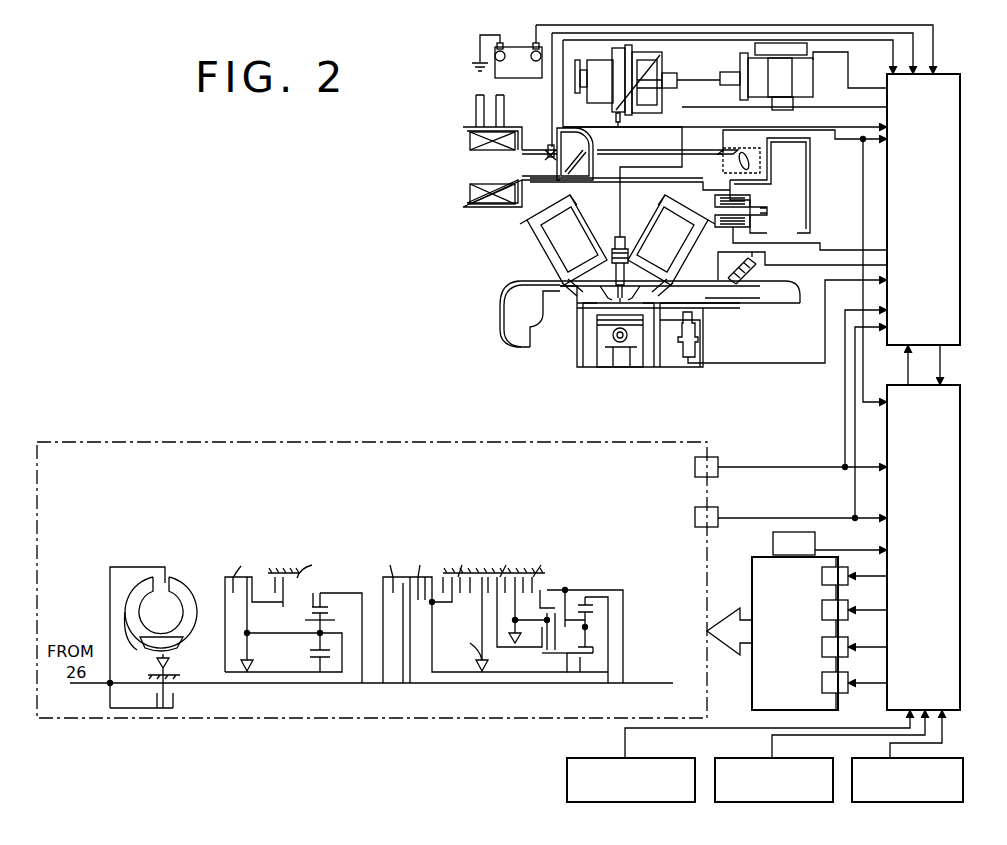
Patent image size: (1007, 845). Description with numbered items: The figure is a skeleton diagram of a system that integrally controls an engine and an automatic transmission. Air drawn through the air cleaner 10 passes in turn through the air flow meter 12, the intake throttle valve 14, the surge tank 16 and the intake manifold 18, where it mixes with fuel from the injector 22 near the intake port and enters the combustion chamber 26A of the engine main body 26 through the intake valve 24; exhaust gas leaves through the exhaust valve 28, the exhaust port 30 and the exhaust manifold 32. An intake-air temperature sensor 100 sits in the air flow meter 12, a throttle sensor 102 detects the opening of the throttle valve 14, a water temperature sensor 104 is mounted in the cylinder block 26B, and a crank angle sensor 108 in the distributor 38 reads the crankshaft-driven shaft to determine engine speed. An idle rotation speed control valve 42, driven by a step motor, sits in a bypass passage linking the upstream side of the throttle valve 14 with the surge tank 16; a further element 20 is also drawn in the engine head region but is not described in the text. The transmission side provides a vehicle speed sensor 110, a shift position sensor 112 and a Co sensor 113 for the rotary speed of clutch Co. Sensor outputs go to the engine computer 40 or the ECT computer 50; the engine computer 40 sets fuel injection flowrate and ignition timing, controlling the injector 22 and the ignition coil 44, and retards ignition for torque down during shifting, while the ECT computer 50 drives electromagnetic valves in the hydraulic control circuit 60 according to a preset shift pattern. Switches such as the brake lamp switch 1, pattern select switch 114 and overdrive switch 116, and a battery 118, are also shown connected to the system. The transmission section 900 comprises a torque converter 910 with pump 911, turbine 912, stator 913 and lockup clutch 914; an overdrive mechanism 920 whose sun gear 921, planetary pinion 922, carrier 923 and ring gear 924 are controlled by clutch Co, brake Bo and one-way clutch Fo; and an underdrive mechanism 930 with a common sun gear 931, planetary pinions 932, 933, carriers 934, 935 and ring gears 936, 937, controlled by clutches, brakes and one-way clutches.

The brake lamp switch 1 is at (963, 768).
The air cleaner 10 is at (470, 165).
The air flow meter 12 is at (570, 145).
The intake throttle valve 14 is at (760, 155).
The surge tank 16 is at (799, 198).
The intake manifold 18 is at (727, 290).
The exhaust valve 20 is at (667, 283).
The injector 22 is at (730, 265).
The intake valve 24 is at (632, 298).
The main body of the engine 26 is at (572, 353).
The combustion chamber 26A is at (607, 307).
The cylinder block 26B is at (660, 350).
The exhaust valve 28 is at (600, 298).
The exhaust port 30 is at (553, 283).
The exhaust manifold 32 is at (520, 300).
The distributor 38 is at (598, 98).
The engine computer 40 is at (943, 222).
The idle rotation speed control valve 42 is at (713, 210).
The ignition coil 44 is at (803, 77).
The ECT computer 50 is at (947, 590).
The hydraulic control circuit 60 is at (752, 665).
The intake-air temperature sensor 100 is at (550, 158).
The throttle sensor 102 is at (722, 145).
The water temperature sensor 104 is at (697, 325).
The crank angle sensor 108 is at (648, 58).
The vehicle speed sensor 110 is at (712, 478).
The shift position sensor 112 is at (712, 528).
The Co sensor 113 is at (802, 526).
The pattern select switch 114 is at (567, 773).
The overdrive switch 116 is at (735, 758).
The battery 118 is at (498, 72).
The transmission section 900 is at (578, 442).
The torque converter 910 is at (140, 563).
The pump 911 is at (193, 593).
The turbine 912 is at (132, 635).
The stator 913 is at (170, 650).
The lockup clutch 914 is at (170, 708).
The overdrive mechanism 920 is at (298, 560).
The sun gear 921 is at (311, 655).
The planetary pinion 922 is at (312, 616).
The carrier 923 is at (328, 610).
The ring gear 924 is at (308, 592).
The underdrive mechanism 930 is at (482, 568).
The common sun gear 931 is at (580, 657).
The planetary pinion 932 is at (563, 640).
The planetary pinion 933 is at (594, 610).
The carrier 934 is at (537, 627).
The carrier 935 is at (587, 627).
The ring gear 936 is at (541, 592).
The ring gear 937 is at (594, 598).